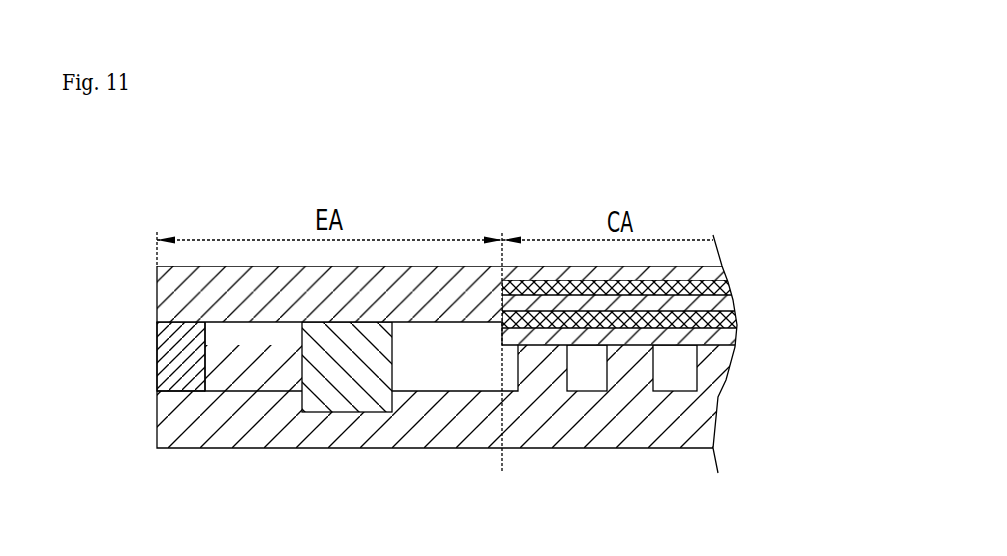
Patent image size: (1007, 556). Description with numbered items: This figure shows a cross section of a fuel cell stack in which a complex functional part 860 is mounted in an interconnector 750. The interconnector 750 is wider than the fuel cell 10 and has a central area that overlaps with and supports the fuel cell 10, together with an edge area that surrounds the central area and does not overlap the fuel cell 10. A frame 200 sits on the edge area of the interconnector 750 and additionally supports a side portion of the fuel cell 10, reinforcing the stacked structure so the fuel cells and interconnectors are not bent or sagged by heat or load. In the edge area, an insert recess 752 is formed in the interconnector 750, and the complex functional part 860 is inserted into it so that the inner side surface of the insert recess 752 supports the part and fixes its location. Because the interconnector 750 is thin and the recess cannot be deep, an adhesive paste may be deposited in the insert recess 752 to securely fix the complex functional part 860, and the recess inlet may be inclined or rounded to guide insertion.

The fuel cell 10 is at (756, 303).
The frame 200 is at (241, 287).
The interconnector 750 is at (462, 428).
The insert recess 752 is at (352, 417).
The complex functional part 860 is at (323, 365).